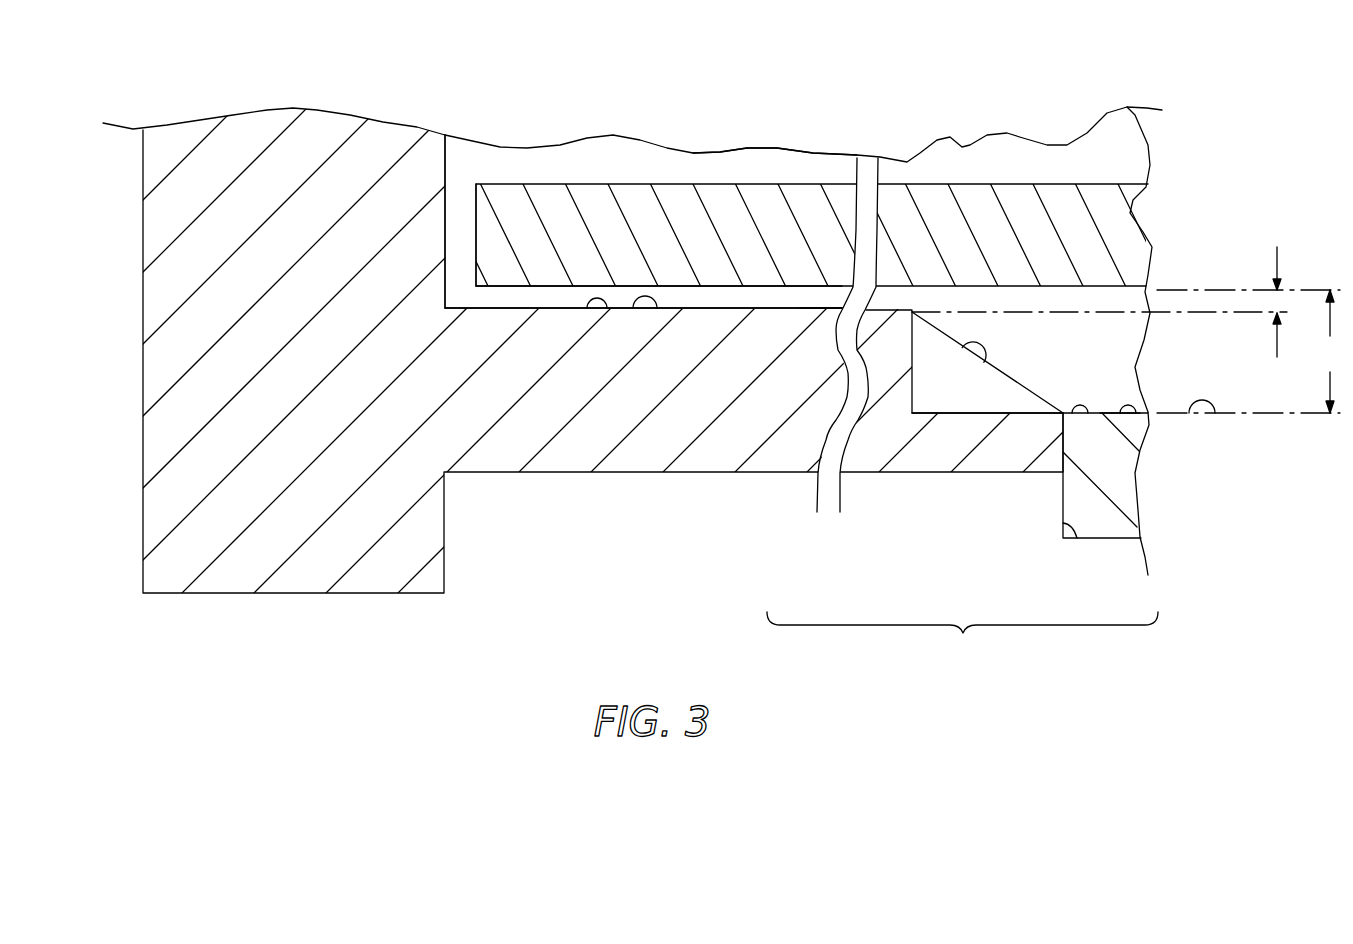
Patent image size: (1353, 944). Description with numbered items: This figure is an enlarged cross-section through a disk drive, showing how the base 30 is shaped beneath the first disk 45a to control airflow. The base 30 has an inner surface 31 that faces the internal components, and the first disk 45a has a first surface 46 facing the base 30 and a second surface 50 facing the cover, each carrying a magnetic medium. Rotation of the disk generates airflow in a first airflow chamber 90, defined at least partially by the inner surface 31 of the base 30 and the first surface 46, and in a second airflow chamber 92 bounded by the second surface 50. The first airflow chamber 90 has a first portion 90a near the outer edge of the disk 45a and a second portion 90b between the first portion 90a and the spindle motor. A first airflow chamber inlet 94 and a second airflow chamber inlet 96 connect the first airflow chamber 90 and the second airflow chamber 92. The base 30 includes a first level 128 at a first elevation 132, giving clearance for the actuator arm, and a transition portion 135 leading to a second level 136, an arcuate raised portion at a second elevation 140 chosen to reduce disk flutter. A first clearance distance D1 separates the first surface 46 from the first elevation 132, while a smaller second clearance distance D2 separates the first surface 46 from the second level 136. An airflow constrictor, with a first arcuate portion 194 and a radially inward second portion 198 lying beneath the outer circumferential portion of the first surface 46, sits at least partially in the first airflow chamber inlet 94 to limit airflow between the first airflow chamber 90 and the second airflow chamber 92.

The base 30 is at (143, 376).
The inner surface 31 is at (1062, 437).
The first disk 45a is at (476, 240).
The first surface 46 is at (678, 287).
The second surface 50 is at (652, 184).
The first airflow chamber 90 is at (962, 414).
The first portion 90a is at (813, 317).
The second portion 90b is at (1112, 389).
The second airflow chamber 92 is at (770, 149).
The first airflow chamber inlet 94 is at (474, 317).
The second airflow chamber inlet 96 is at (487, 163).
The first level 128 is at (1108, 414).
The first elevation 132 is at (1212, 413).
The transition portion 135 is at (988, 360).
The second level 136 is at (652, 309).
The second elevation 140 is at (1218, 313).
The first arcuate portion 194 is at (450, 165).
The second portion 198 is at (588, 308).
The first clearance distance D1 is at (1330, 351).
The second clearance distance D2 is at (1277, 302).